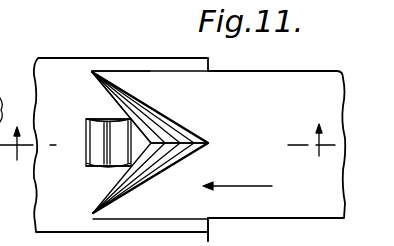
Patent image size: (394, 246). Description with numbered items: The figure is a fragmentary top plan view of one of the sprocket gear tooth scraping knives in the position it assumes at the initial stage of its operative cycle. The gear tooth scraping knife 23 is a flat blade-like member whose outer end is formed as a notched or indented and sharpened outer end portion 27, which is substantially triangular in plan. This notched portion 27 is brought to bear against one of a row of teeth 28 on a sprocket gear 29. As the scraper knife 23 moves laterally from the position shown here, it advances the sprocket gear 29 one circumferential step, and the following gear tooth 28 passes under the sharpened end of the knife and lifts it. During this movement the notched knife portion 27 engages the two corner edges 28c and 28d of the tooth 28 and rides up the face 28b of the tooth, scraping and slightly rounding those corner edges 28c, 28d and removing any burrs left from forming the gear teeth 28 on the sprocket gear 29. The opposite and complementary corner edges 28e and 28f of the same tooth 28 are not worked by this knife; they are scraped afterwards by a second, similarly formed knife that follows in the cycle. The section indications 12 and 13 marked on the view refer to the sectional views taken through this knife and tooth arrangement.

The section line 12 is at (167, 153).
The adjacent part (partially shown) 13 is at (4, 94).
The gear tooth scraping knife 23 is at (283, 81).
The notched outer end portion 27 is at (96, 84).
The gear tooth 28 is at (100, 171).
The tooth face 28b is at (170, 123).
The corner edge 28c is at (131, 120).
The corner edge 28d is at (151, 146).
The corner edge 28e is at (87, 121).
The corner edge 28f is at (87, 168).
The sprocket gear 29 is at (209, 239).